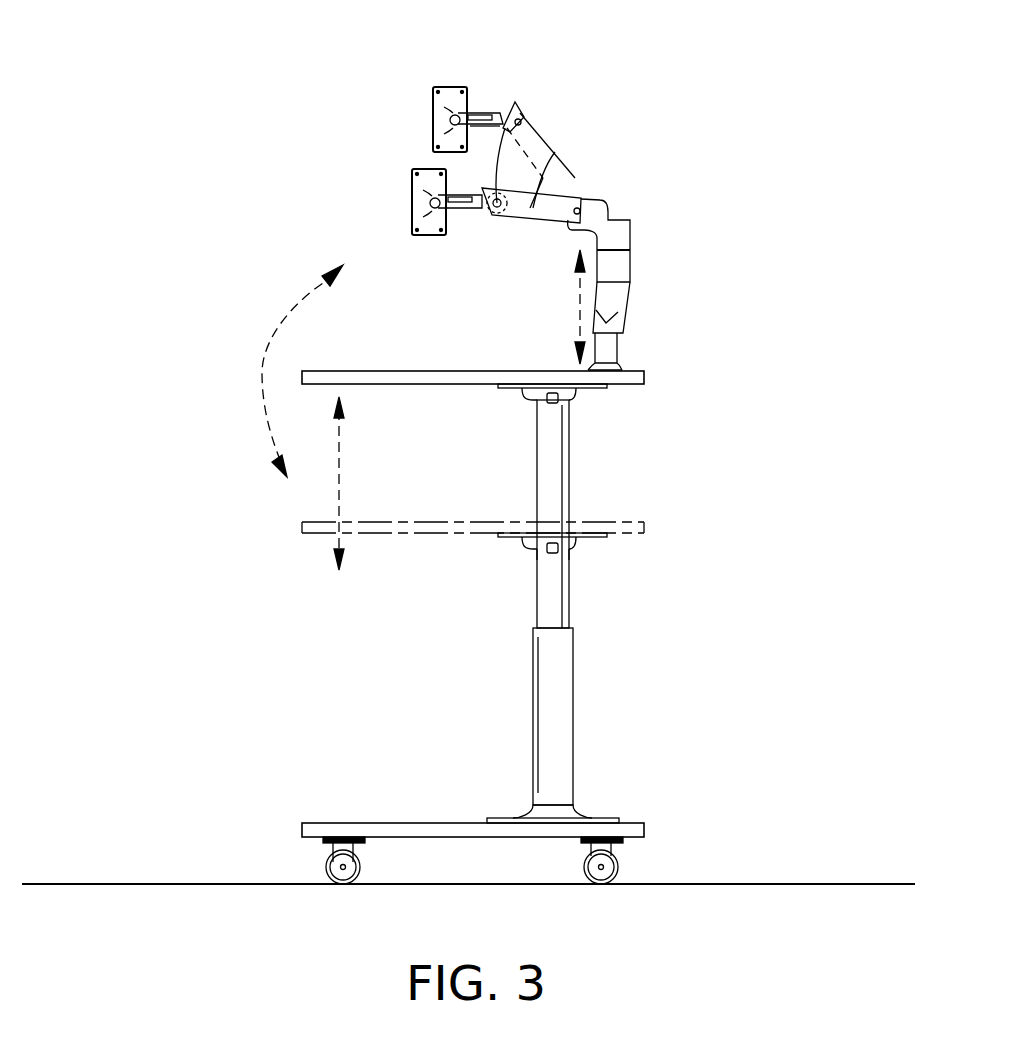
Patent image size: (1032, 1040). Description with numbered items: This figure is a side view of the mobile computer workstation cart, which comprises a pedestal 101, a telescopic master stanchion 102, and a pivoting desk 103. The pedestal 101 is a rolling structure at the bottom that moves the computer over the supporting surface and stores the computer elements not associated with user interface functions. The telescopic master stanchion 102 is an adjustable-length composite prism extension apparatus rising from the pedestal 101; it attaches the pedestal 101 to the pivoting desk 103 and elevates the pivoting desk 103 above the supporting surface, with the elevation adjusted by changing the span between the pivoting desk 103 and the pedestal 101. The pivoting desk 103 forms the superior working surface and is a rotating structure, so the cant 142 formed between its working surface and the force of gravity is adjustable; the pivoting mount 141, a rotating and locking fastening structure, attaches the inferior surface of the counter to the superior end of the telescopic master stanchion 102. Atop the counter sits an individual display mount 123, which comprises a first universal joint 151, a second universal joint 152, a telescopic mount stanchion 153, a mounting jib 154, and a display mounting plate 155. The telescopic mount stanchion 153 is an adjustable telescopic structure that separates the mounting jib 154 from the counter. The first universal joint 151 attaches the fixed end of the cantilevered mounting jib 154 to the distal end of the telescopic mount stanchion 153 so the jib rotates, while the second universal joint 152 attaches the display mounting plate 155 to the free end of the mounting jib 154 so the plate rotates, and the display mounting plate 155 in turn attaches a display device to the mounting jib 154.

The pedestal 101 is at (397, 822).
The telescopic master stanchion 102 is at (573, 740).
The pivoting desk 103 is at (457, 385).
The individual display mount 123 is at (703, 103).
The pivoting mount 141 is at (578, 392).
The cant 142 is at (263, 375).
The first universal joint 151 is at (580, 208).
The second universal joint 152 is at (517, 108).
The telescopic mount stanchion 153 is at (626, 297).
The mounting jib 154 is at (555, 152).
The display mounting plate 155 is at (427, 237).